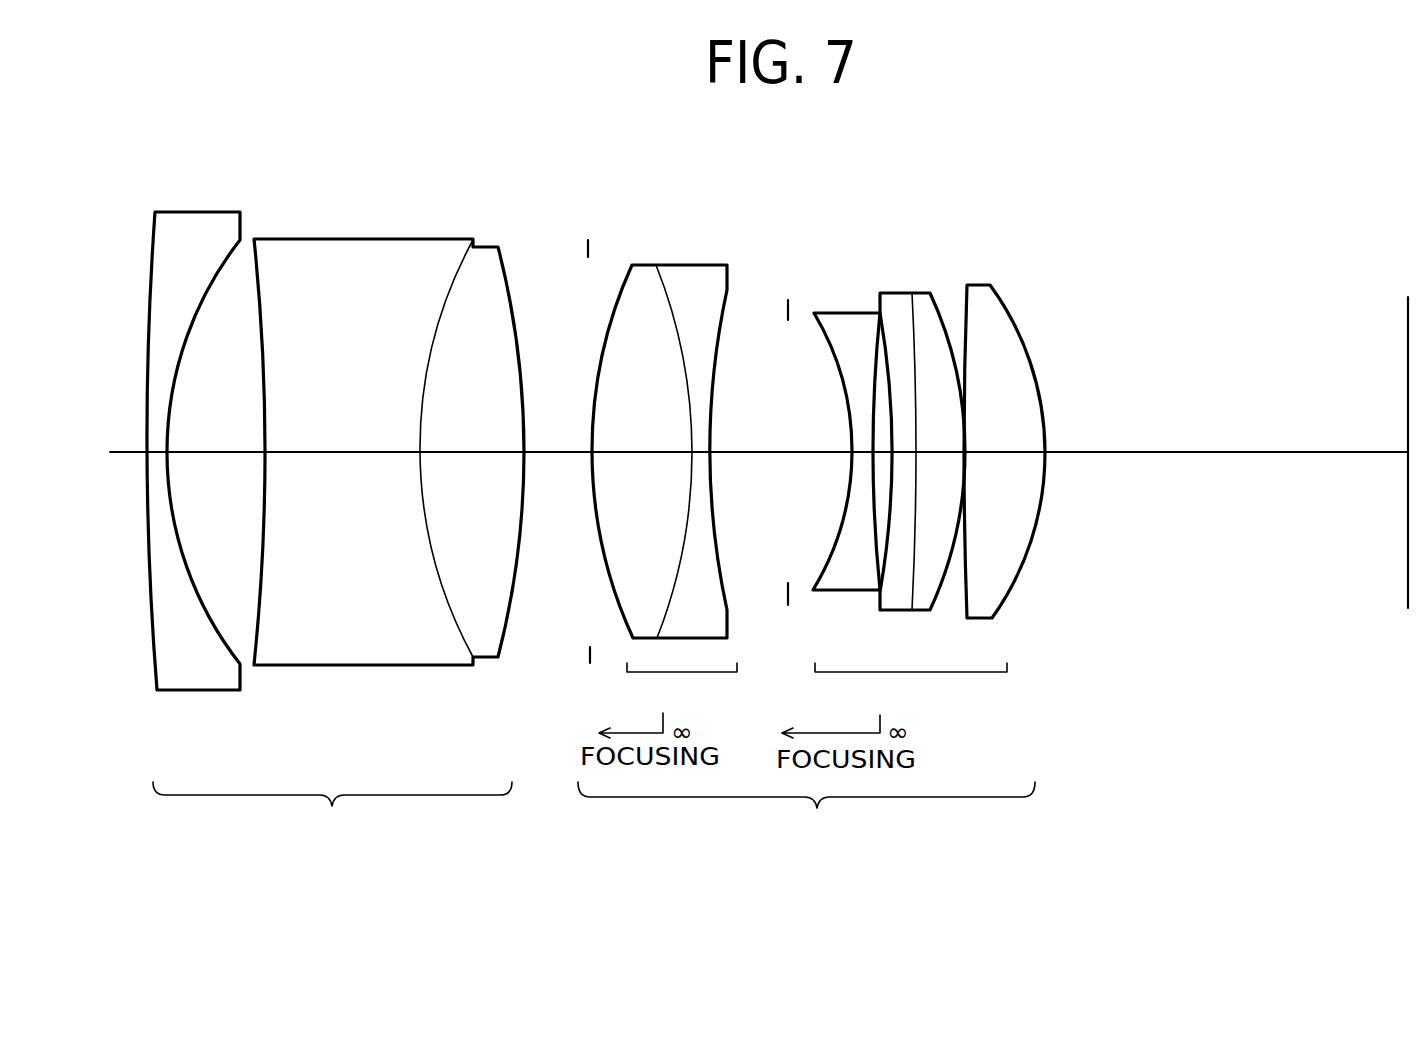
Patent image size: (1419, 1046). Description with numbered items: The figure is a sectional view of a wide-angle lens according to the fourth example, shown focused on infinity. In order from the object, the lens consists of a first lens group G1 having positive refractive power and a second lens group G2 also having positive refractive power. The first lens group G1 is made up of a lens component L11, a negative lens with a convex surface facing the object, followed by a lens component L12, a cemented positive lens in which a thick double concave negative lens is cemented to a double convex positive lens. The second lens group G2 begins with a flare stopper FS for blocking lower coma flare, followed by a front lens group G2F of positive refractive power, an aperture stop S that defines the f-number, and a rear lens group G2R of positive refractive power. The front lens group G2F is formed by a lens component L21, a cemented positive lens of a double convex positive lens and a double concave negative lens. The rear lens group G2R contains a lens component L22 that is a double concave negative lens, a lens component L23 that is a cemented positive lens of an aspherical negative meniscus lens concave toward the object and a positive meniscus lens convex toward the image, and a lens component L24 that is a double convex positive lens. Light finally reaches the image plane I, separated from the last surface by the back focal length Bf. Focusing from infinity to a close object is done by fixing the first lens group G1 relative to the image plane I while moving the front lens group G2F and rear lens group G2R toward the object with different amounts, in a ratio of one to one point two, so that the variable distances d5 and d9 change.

The 11 lens component L11 is at (197, 212).
The 12 lens component L12 is at (500, 231).
The 21 lens component L21 is at (733, 240).
The 22 lens component L22 is at (847, 312).
The 23 lens component L23 is at (938, 292).
The 24 lens component L24 is at (982, 285).
The flare stopper FS is at (588, 240).
The aperture stop S is at (788, 300).
The image plane I is at (1408, 327).
The first lens group G1 is at (332, 818).
The second lens group G2 is at (806, 816).
The front lens group G2F is at (682, 683).
The rear lens group G2R is at (911, 683).
The variable distance at surface number 5 d5 is at (592, 452).
The variable distance at surface number 9 d9 is at (795, 460).
The back focal length Bf is at (1408, 452).